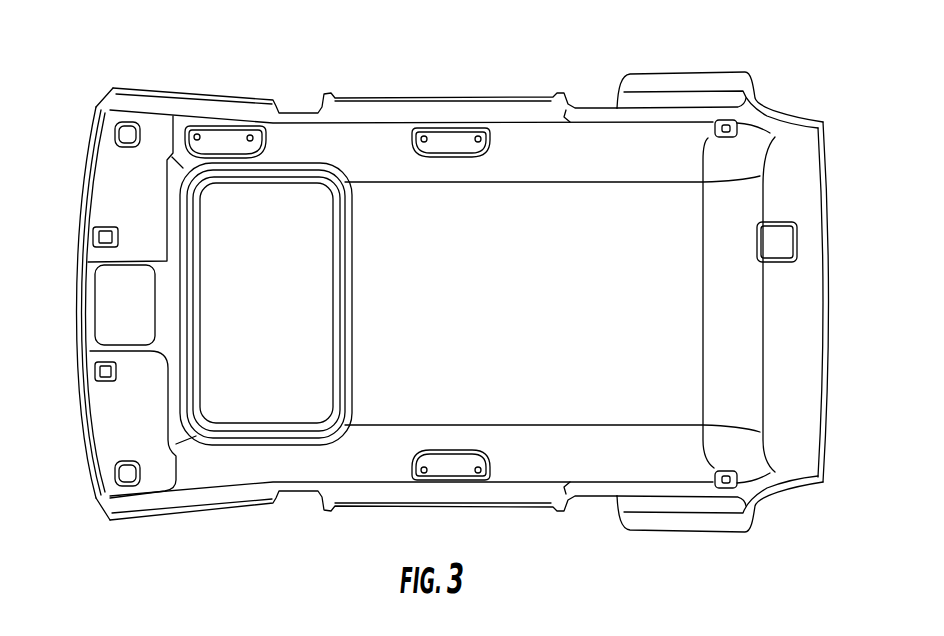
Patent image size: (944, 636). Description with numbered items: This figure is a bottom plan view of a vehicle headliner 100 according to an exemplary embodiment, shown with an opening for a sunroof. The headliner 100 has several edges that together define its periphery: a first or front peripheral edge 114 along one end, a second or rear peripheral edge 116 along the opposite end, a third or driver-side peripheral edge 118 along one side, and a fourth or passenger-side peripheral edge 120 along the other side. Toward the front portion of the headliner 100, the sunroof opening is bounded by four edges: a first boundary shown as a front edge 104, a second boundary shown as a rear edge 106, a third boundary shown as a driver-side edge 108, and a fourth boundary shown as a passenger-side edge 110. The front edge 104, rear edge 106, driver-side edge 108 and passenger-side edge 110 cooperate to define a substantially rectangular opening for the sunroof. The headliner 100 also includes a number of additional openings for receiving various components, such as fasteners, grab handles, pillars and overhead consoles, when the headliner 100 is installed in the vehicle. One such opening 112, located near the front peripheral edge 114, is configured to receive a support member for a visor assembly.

The headliner 100 is at (637, 73).
The front edge 104 is at (197, 328).
The rear edge 106 is at (335, 292).
The driver-side edge 108 is at (248, 182).
The passenger-side edge 110 is at (252, 428).
The opening 112 is at (128, 124).
The front peripheral edge 114 is at (84, 251).
The rear peripheral edge 116 is at (828, 265).
The driver-side peripheral edge 118 is at (362, 103).
The passenger-side peripheral edge 120 is at (519, 509).